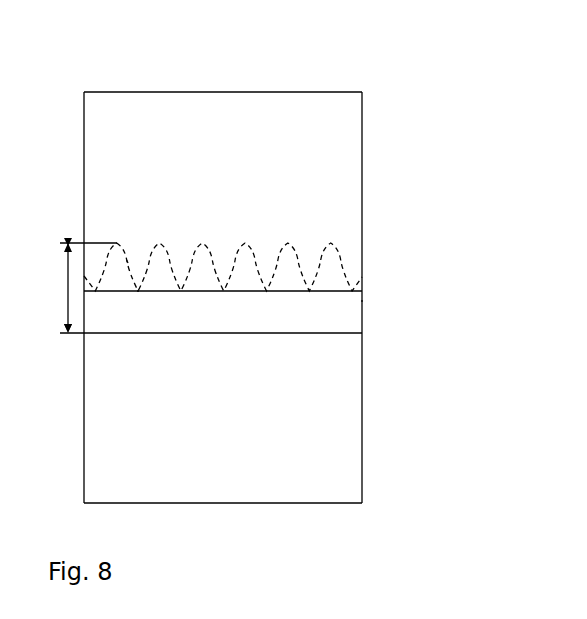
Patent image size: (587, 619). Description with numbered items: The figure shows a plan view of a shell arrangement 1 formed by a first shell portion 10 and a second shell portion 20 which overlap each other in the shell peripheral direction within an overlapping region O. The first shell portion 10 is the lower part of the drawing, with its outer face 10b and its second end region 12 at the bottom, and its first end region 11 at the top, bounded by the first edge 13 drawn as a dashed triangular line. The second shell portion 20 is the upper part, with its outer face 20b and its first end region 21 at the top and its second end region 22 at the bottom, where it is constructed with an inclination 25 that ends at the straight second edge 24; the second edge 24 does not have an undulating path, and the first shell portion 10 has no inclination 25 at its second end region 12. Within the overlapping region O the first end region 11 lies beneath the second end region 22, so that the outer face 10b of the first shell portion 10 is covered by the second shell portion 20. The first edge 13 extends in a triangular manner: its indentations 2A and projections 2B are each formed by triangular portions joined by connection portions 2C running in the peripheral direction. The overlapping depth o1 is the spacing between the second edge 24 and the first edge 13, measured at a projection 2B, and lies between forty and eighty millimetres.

The shell arrangement 1 is at (286, 44).
The first end region 21 is at (79, 104).
The outer face 20b is at (327, 134).
The second shell portion 20 is at (364, 180).
The projection 2B is at (120, 239).
The connection portion 2C is at (129, 263).
The first end region 11 is at (290, 270).
The first edge 13 is at (341, 251).
The overlapping region O is at (383, 299).
The overlapping depth o1 is at (67, 290).
The second end region 22 is at (369, 322).
The indentation 2A is at (139, 297).
The second edge 24 is at (116, 338).
The inclination 25 is at (188, 318).
The first shell portion 10 is at (363, 405).
The outer face 10b is at (265, 463).
The second end region 12 is at (371, 495).